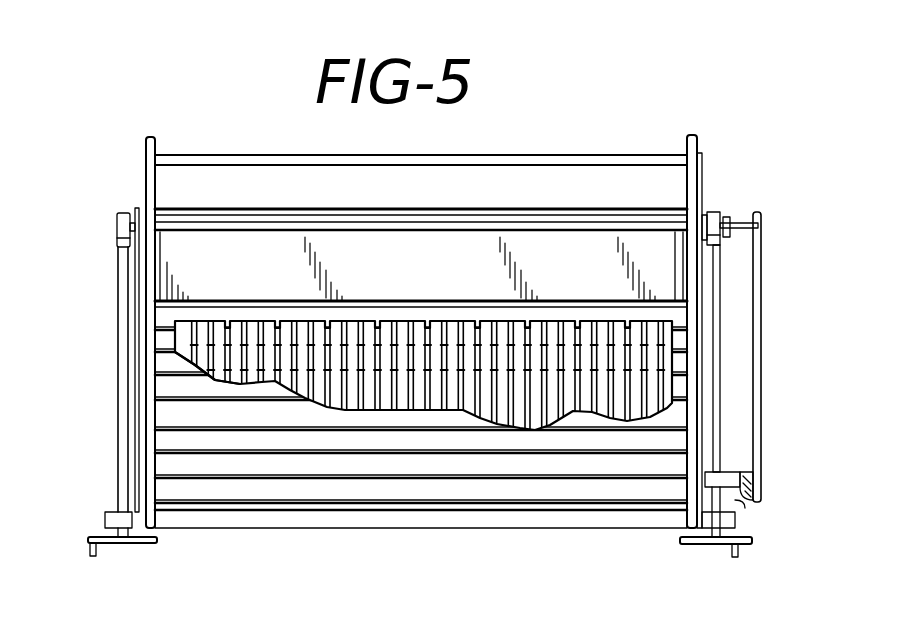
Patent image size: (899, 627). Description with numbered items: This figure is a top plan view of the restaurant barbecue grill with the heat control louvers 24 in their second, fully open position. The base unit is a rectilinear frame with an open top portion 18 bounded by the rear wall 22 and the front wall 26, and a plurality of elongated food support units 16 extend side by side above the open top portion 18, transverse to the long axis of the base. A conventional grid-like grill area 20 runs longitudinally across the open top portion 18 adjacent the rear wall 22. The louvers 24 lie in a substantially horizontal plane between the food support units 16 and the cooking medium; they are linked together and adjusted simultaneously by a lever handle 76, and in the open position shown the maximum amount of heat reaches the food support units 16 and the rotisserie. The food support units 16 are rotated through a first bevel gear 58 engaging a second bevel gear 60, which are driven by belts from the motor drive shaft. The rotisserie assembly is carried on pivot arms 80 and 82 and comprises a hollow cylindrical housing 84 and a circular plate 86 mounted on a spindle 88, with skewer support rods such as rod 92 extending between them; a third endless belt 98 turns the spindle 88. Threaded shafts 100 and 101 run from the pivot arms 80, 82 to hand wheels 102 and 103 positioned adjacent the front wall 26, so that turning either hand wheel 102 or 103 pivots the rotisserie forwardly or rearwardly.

The food support units 16 is at (487, 330).
The open top portion 18 is at (170, 375).
The grill area 20 is at (245, 248).
The rear wall 22 is at (140, 208).
The heat control louvers 24 is at (160, 440).
The front wall 26 is at (522, 532).
The first bevel gear 58 is at (745, 507).
The second bevel gear 60 is at (757, 497).
The lever handle 76 is at (115, 370).
The pivot arm 80 is at (715, 213).
The pivot arm 82 is at (117, 218).
The cylindrical housing 84 is at (692, 135).
The circular plate 86 is at (150, 137).
The spindle 88 is at (392, 217).
The skewer support rod 92 is at (180, 155).
The third endless belt 98 is at (760, 378).
The threaded shaft 100 is at (723, 448).
The threaded shaft 101 is at (118, 418).
The hand wheel 102 is at (707, 547).
The hand wheel 103 is at (120, 540).